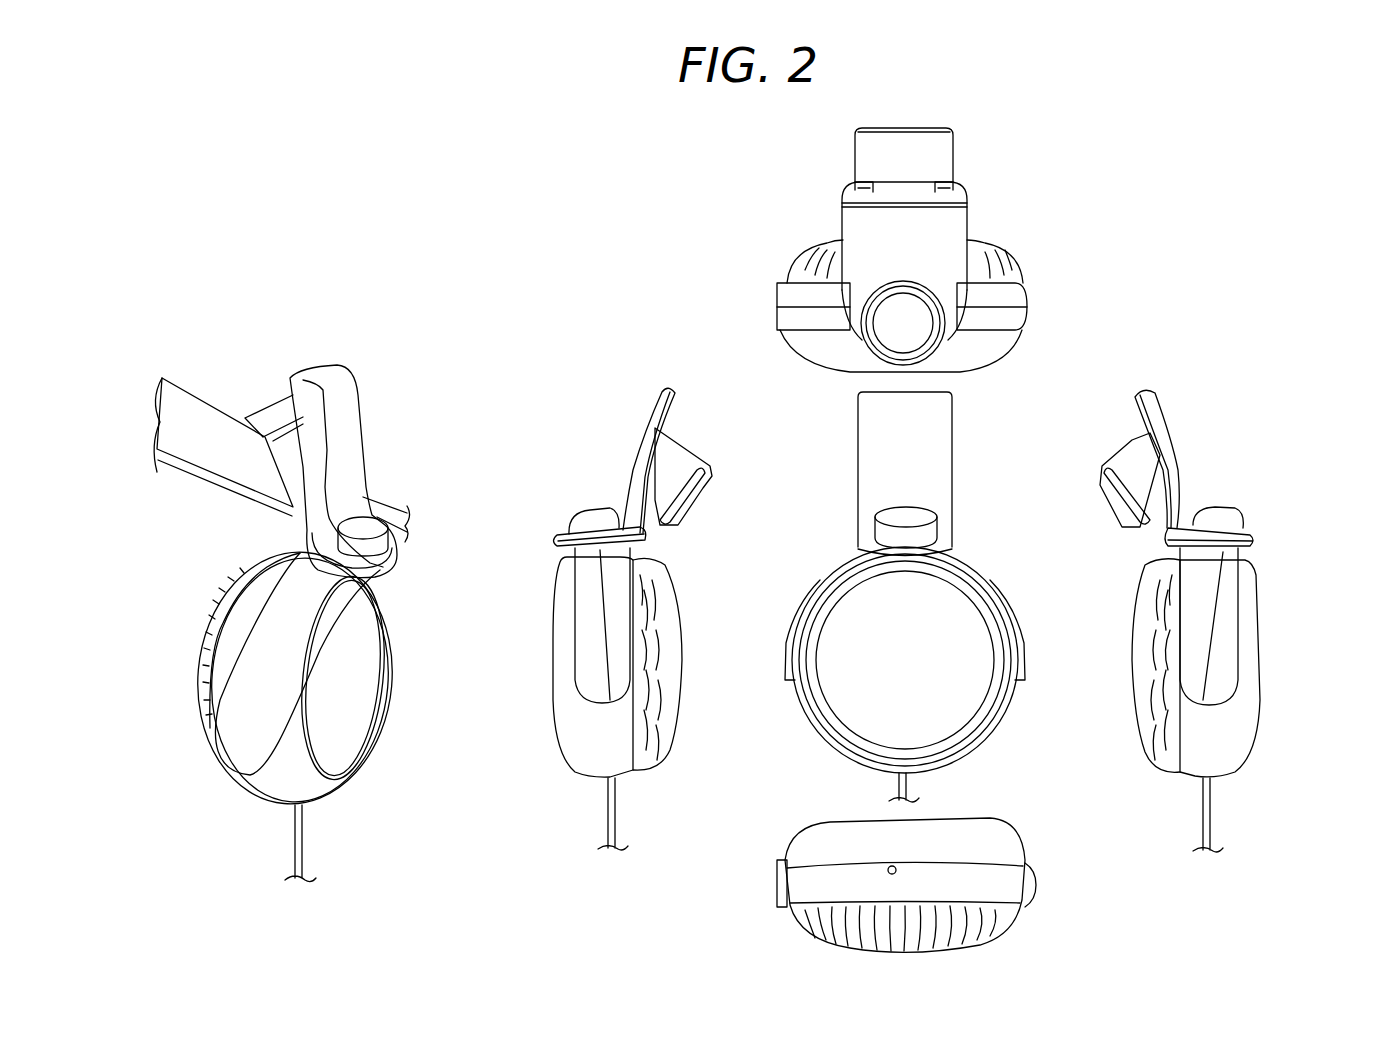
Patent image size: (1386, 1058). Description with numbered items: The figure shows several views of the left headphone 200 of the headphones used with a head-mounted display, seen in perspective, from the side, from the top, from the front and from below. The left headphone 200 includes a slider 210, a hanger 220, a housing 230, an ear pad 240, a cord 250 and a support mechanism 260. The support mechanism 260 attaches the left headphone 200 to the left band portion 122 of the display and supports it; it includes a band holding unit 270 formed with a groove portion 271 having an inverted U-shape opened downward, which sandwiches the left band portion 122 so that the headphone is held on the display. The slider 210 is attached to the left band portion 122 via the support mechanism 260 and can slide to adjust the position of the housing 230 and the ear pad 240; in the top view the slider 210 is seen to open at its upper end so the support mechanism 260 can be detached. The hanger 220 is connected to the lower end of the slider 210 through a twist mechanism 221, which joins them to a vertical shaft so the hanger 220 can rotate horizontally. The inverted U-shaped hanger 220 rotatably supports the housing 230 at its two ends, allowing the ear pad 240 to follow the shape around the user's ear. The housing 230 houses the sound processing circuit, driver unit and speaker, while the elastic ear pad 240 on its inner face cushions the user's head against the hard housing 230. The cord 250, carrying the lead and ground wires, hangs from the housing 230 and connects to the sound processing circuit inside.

The left band portion 122 is at (198, 394).
The left headphone 200 is at (366, 362).
The slider 210 is at (359, 400).
The hanger 220 is at (345, 622).
The twist mechanism 221 is at (566, 520).
The housing 230 is at (393, 690).
The ear pad 240 is at (200, 627).
The cord 250 is at (304, 836).
The support mechanism 260 is at (265, 368).
The band holding unit 270 is at (712, 468).
The groove portion 271 is at (678, 522).